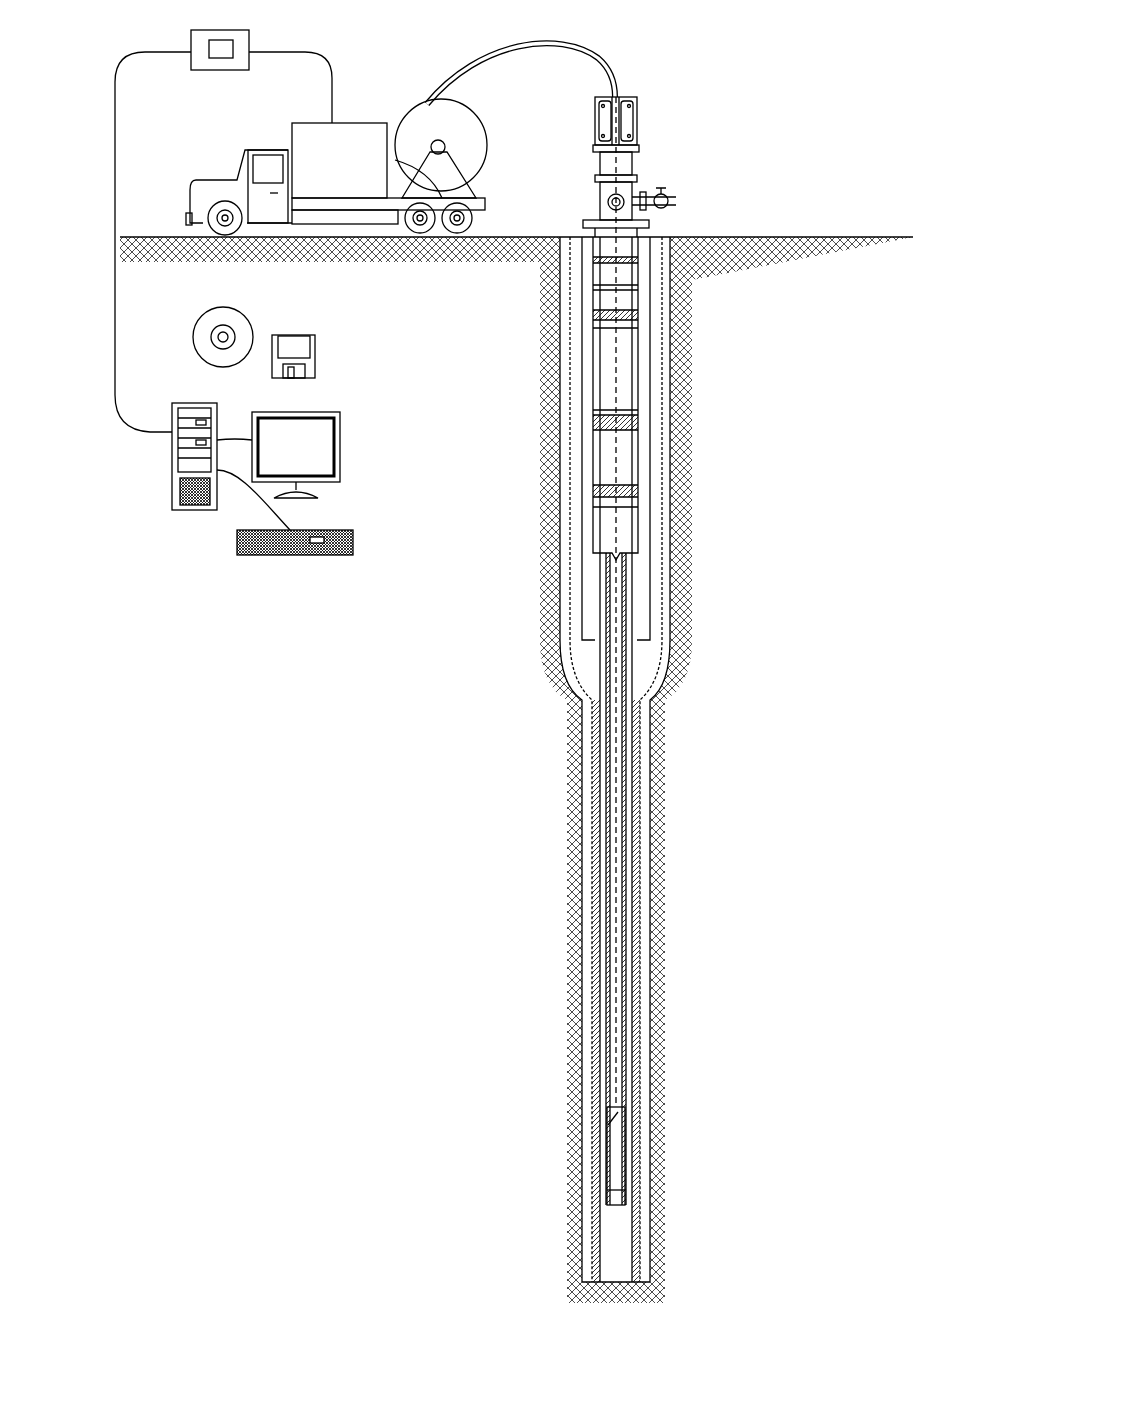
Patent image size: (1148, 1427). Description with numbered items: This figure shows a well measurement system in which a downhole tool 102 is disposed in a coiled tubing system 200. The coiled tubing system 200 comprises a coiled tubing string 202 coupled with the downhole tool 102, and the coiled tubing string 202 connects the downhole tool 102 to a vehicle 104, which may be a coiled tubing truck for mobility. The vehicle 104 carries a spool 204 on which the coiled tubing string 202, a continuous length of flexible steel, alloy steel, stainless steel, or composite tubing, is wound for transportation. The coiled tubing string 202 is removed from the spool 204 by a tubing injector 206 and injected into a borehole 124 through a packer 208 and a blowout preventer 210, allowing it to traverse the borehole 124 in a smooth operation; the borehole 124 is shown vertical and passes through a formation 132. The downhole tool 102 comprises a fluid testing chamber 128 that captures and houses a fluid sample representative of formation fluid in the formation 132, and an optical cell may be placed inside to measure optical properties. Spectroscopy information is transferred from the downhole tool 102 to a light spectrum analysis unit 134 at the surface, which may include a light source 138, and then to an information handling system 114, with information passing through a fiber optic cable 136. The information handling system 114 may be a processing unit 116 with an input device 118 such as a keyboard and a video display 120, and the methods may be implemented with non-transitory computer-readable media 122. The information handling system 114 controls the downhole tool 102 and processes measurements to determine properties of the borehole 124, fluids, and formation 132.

The coiled tubing system 200 is at (743, 40).
The downhole tool 102 is at (580, 1185).
The vehicle 104 is at (345, 123).
The information handling system 114 is at (190, 572).
The processing unit 116 is at (188, 403).
The input device 118 is at (353, 540).
The video display 120 is at (297, 412).
The non-transitory computer-readable media 122 is at (243, 308).
The borehole 124 is at (567, 380).
The fluid testing chamber 128 is at (612, 1115).
The formation 132 is at (800, 1039).
The light spectrum analysis unit 134 is at (243, 30).
The fiber optic cable 136 is at (530, 62).
The light source 138 is at (212, 58).
The coiled tubing string 202 is at (590, 52).
The spool 204 is at (486, 140).
The tubing injector 206 is at (640, 110).
The packer 208 is at (633, 165).
The blowout preventer 210 is at (598, 198).